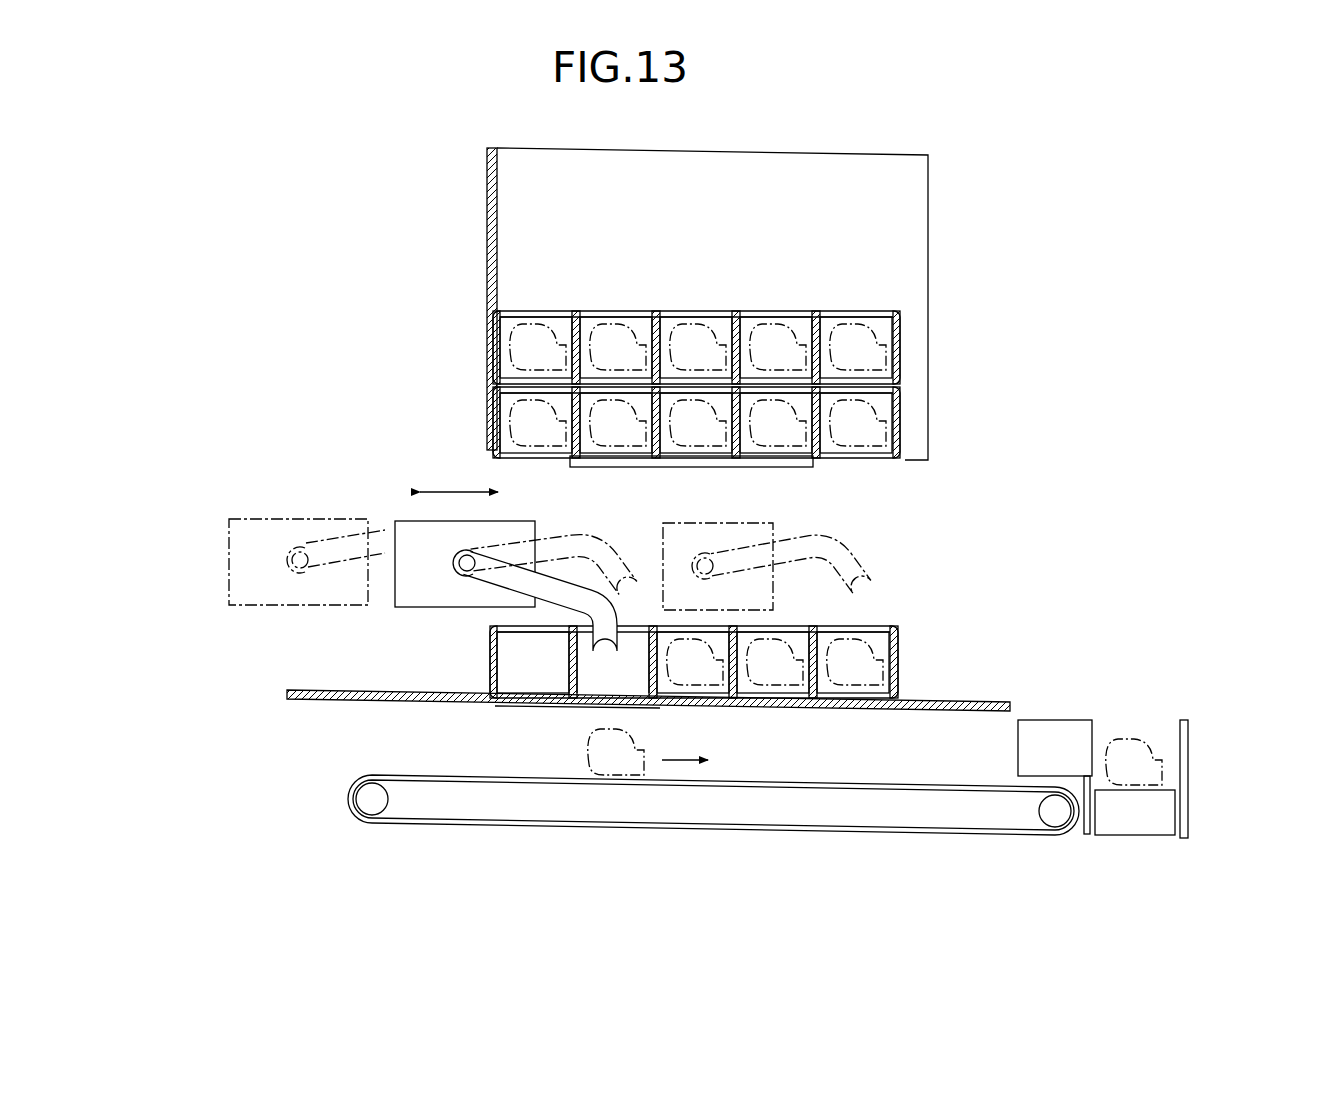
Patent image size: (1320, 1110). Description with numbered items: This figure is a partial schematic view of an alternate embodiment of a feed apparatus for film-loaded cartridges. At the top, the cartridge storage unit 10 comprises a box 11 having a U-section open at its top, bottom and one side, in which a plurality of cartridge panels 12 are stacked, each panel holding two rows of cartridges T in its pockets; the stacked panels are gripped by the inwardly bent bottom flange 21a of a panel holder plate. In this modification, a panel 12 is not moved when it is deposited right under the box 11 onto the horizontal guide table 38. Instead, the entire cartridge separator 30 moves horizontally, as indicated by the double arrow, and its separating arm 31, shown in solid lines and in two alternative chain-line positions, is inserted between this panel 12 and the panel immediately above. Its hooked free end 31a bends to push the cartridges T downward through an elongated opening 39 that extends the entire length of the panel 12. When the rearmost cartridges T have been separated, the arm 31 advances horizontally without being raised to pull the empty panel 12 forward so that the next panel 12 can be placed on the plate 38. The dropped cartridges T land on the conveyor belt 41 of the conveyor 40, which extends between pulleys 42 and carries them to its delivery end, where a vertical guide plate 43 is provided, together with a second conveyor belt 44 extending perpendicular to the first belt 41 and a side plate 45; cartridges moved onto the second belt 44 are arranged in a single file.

The cartridge storage unit 10 is at (478, 161).
The box 11 is at (906, 213).
The cartridge panel 12 is at (898, 317).
The cartridge T is at (860, 413).
The bottom flange 21a is at (763, 466).
The cartridge separator 30 is at (403, 508).
The separating arm 31 is at (550, 580).
The free end 31a is at (608, 613).
The horizontal guide table 38 is at (325, 690).
The opening 39 is at (520, 703).
The conveyor 40 is at (1136, 772).
The conveyor belt 41 is at (452, 774).
The pulley 42 is at (373, 808).
The vertical guide plate 43 is at (1055, 727).
The second conveyor belt 44 is at (1126, 835).
The side plate 45 is at (1190, 750).